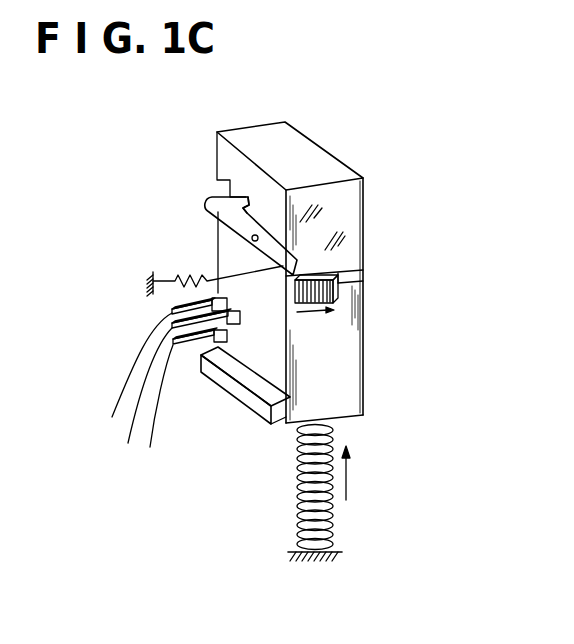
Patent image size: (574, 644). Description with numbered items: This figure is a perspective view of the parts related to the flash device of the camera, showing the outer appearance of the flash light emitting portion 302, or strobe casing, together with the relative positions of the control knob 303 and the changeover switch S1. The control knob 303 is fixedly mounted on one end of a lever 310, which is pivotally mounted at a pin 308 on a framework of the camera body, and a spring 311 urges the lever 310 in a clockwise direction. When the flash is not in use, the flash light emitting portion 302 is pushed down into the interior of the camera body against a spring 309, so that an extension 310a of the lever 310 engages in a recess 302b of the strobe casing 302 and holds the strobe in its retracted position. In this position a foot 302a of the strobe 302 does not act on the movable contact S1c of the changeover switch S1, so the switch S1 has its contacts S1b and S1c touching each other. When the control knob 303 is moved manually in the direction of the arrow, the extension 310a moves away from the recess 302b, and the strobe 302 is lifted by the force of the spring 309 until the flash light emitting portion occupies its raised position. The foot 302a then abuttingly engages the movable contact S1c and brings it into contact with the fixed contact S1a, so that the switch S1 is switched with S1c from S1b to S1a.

The flash light emitting portion 302 is at (323, 165).
The foot 302a is at (241, 398).
The recess 302b is at (246, 214).
The control knob 303 is at (340, 288).
The pin 308 is at (250, 237).
The spring 309 is at (297, 487).
The lever 310 is at (211, 204).
The extension 310a is at (236, 199).
The spring 311 is at (170, 277).
The changeover switch S1 is at (156, 312).
The fixed contact S1a is at (226, 303).
The fixed contact S1b is at (192, 350).
The movable contact S1c is at (236, 328).